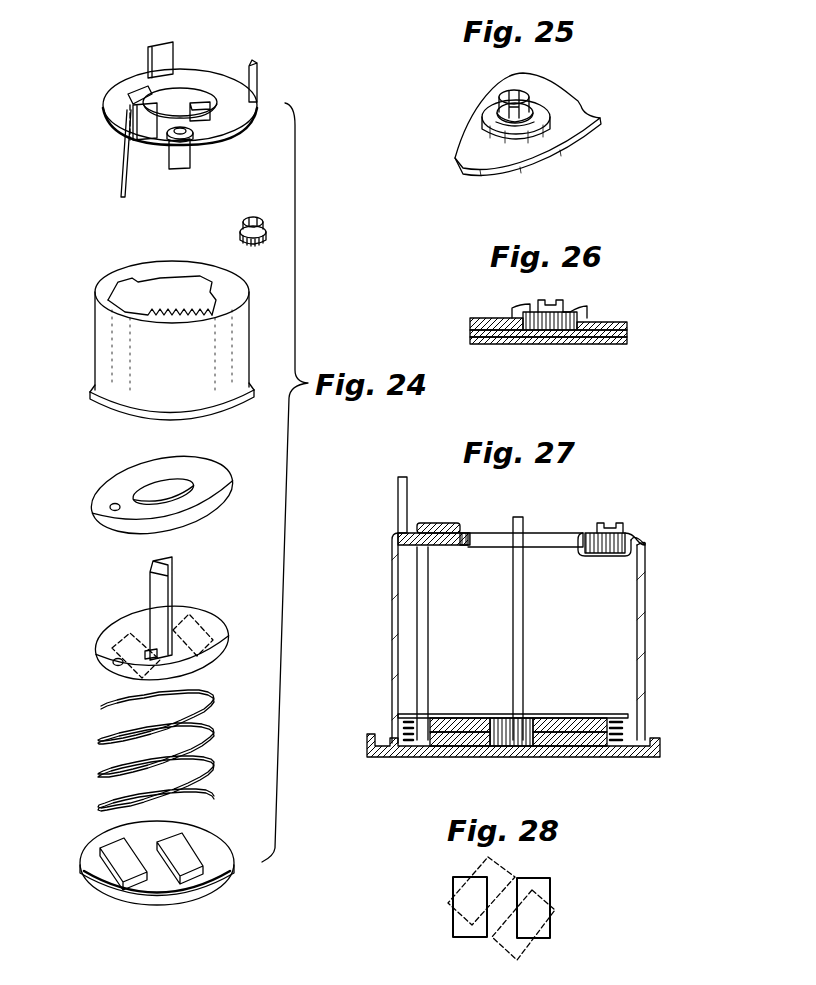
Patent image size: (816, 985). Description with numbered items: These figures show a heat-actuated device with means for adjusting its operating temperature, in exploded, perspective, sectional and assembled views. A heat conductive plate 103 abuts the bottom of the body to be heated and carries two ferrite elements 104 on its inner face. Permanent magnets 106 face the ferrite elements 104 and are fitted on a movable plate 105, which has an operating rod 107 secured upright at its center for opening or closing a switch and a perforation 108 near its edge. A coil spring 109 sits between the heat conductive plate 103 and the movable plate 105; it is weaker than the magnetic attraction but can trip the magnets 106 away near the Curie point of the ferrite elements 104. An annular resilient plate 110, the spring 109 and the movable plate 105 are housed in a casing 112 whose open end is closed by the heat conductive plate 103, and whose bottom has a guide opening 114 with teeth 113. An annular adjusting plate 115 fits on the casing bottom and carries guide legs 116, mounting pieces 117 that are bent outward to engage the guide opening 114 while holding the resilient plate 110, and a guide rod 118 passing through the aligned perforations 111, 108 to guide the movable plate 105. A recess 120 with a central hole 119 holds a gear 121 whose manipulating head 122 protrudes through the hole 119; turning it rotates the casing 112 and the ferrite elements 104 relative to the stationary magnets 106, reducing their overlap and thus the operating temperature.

In FIG. 24, the heat conductive plate 103 is at (88, 867).
In FIG. 27, the heat conductive plate 103 is at (402, 748).
In FIG. 24, the ferrite elements 104 is at (110, 847).
In FIG. 27, the ferrite elements 104 is at (450, 746).
In FIG. 24, the movable plate 105 is at (143, 623).
In FIG. 27, the movable plate 105 is at (593, 714).
In FIG. 24, the permanent magnets 106 is at (207, 612).
In FIG. 27, the permanent magnets 106 is at (462, 717).
In FIG. 24, the operating rod 107 is at (153, 585).
In FIG. 24, the perforation 108 is at (113, 663).
In FIG. 24, the coil spring 109 is at (100, 745).
In FIG. 27, the coil spring 109 is at (620, 731).
In FIG. 24, the annular resilient plate 110 is at (148, 475).
In FIG. 26, the annular resilient plate 110 is at (495, 331).
In FIG. 27, the annular resilient plate 110 is at (407, 543).
In FIG. 24, the perforation 111 is at (110, 505).
In FIG. 24, the casing 112 is at (103, 327).
In FIG. 26, the casing 112 is at (615, 344).
In FIG. 27, the casing 112 is at (638, 618).
In FIG. 24, the teeth 113 is at (203, 316).
In FIG. 26, the teeth 113 is at (588, 337).
In FIG. 24, the guide opening 114 is at (183, 287).
In FIG. 27, the guide opening 114 is at (543, 537).
In FIG. 24, the annular adjusting plate 115 is at (130, 92).
In FIG. 26, the annular adjusting plate 115 is at (623, 323).
In FIG. 27, the annular adjusting plate 115 is at (465, 530).
In FIG. 24, the guide legs 116 is at (166, 42).
In FIG. 27, the guide legs 116 is at (398, 498).
In FIG. 24, the mounting pieces 117 is at (192, 108).
In FIG. 26, the mounting pieces 117 is at (530, 344).
In FIG. 27, the mounting pieces 117 is at (447, 546).
In FIG. 24, the guide rod 118 is at (122, 177).
In FIG. 27, the guide rod 118 is at (423, 625).
In FIG. 24, the central hole 119 is at (167, 140).
In FIG. 25, the central hole 119 is at (530, 106).
In FIG. 27, the central hole 119 is at (592, 530).
In FIG. 24, the recess 120 is at (192, 137).
In FIG. 25, the recess 120 is at (545, 131).
In FIG. 27, the recess 120 is at (632, 540).
In FIG. 24, the gear 121 is at (253, 244).
In FIG. 26, the gear 121 is at (585, 313).
In FIG. 27, the gear 121 is at (600, 553).
In FIG. 24, the manipulating head 122 is at (258, 218).
In FIG. 25, the manipulating head 122 is at (505, 98).
In FIG. 26, the manipulating head 122 is at (547, 302).
In FIG. 27, the manipulating head 122 is at (617, 530).